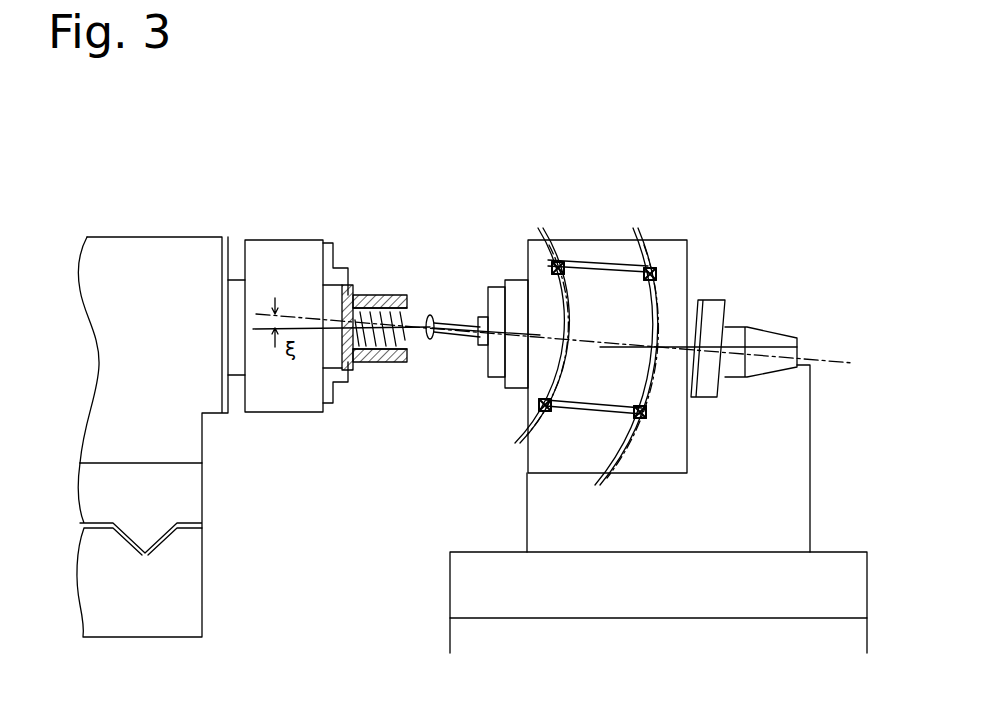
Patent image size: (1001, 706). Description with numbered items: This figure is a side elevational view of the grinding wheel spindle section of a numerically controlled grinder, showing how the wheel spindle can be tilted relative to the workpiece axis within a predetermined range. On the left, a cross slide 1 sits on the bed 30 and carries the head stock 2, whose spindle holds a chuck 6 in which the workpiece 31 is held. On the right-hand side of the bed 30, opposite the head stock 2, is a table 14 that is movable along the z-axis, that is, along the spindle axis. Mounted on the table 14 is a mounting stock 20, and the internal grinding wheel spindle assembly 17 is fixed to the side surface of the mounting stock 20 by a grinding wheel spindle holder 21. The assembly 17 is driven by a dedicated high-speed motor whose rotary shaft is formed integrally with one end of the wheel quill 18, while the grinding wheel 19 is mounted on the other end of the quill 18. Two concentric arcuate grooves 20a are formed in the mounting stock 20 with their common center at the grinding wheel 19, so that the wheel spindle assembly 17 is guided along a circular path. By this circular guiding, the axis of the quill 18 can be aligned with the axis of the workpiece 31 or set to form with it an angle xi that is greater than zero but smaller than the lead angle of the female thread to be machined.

The cross slide 1 is at (160, 505).
The head stock 2 is at (138, 263).
The chuck 6 is at (282, 268).
The table 14 is at (765, 578).
The internal grinding wheel spindle assembly 17 is at (713, 313).
The wheel quill 18 is at (463, 340).
The grinding wheel 19 is at (427, 337).
The mounting stock 20 is at (670, 257).
The arcuate grooves 20a is at (633, 237).
The grinding wheel spindle holder 21 is at (632, 332).
The bed 30 is at (177, 575).
The workpiece 31 is at (370, 297).